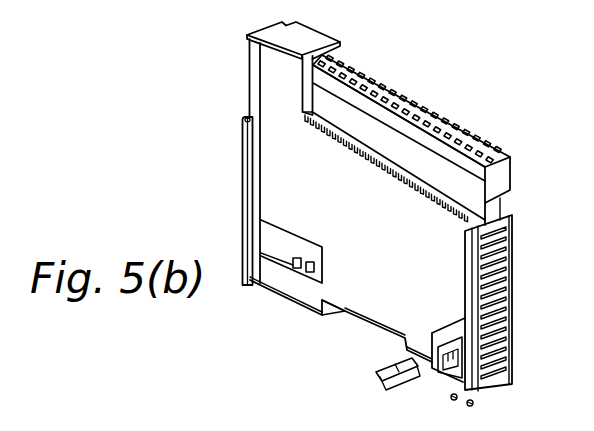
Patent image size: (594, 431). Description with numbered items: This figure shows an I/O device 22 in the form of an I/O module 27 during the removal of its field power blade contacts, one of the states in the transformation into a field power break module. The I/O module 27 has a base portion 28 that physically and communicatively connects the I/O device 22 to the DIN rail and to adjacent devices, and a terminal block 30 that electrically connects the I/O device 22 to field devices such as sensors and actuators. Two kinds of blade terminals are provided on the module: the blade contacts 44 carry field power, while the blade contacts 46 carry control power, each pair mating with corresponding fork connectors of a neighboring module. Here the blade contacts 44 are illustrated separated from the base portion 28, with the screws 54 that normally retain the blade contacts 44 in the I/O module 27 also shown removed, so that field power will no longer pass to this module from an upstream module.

The I/O device 22 is at (470, 113).
The I/O module 27 is at (300, 150).
The base portion 28 is at (297, 290).
The terminal block 30 is at (456, 165).
The blade contacts 44 is at (392, 372).
The blade contacts 46 is at (311, 265).
The screws 54 is at (452, 402).